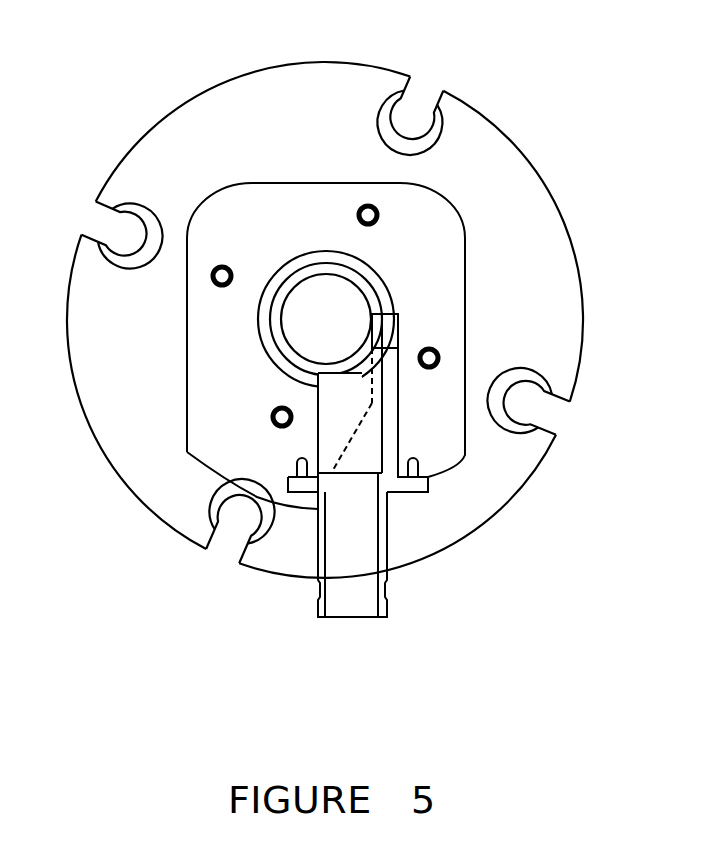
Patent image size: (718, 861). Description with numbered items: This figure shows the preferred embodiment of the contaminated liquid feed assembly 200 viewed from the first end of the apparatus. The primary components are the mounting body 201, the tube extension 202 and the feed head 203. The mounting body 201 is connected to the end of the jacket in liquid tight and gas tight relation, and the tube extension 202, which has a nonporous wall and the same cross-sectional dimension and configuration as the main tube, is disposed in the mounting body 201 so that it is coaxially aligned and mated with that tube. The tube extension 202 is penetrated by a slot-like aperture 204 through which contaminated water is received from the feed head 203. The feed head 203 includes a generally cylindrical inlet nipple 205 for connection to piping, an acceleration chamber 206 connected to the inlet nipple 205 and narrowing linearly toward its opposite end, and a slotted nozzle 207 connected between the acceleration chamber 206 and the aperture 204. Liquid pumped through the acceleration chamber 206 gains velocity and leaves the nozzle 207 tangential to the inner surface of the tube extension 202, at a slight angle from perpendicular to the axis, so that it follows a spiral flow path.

The contaminated liquid feed assembly 200 is at (528, 97).
The mounting body 201 is at (258, 512).
The tube extension 202 is at (367, 278).
The feed head 203 is at (382, 442).
The slot-like aperture 204 is at (378, 340).
The inlet nipple 205 is at (350, 600).
The acceleration chamber 206 is at (362, 457).
The slotted nozzle 207 is at (372, 380).